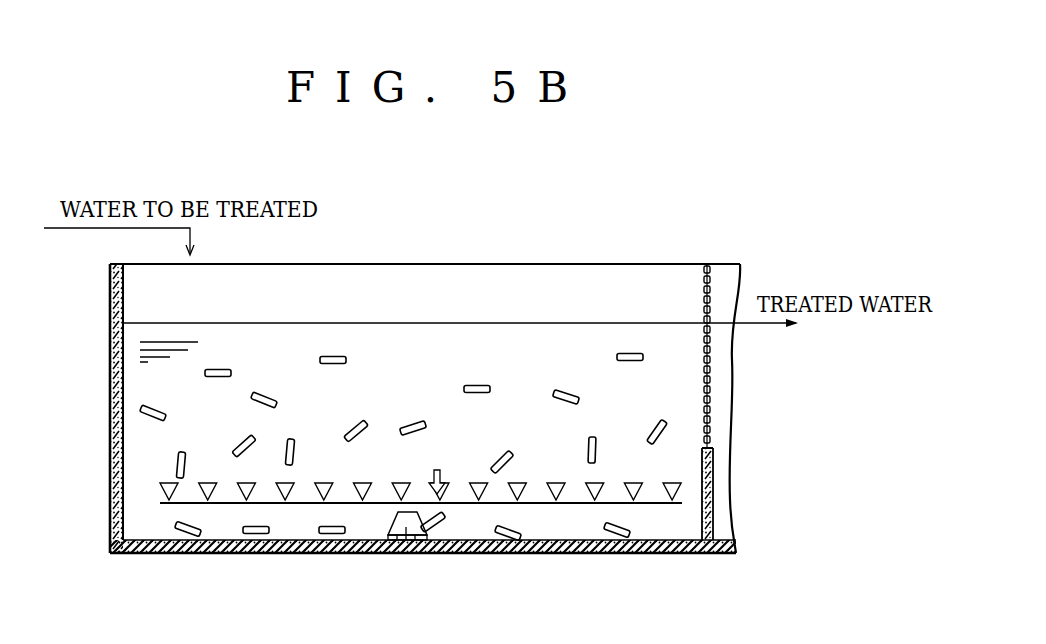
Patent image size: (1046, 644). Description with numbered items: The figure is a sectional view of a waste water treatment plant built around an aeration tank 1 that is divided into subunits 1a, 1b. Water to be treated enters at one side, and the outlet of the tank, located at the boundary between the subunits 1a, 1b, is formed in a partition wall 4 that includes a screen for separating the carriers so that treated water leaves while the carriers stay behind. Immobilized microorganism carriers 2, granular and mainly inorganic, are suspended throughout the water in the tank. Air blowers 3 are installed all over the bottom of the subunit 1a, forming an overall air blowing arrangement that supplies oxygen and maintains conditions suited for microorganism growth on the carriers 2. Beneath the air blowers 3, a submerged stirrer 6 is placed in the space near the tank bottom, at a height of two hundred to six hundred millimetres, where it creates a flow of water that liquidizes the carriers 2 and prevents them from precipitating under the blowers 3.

The aeration tank 1 is at (112, 466).
The subunit 1a is at (636, 556).
The subunit 1b is at (722, 556).
The immobilized microorganism carriers 2 is at (333, 356).
The air blowers 3 is at (163, 487).
The partition wall 4 is at (709, 297).
The submerged stirrer 6 is at (410, 554).